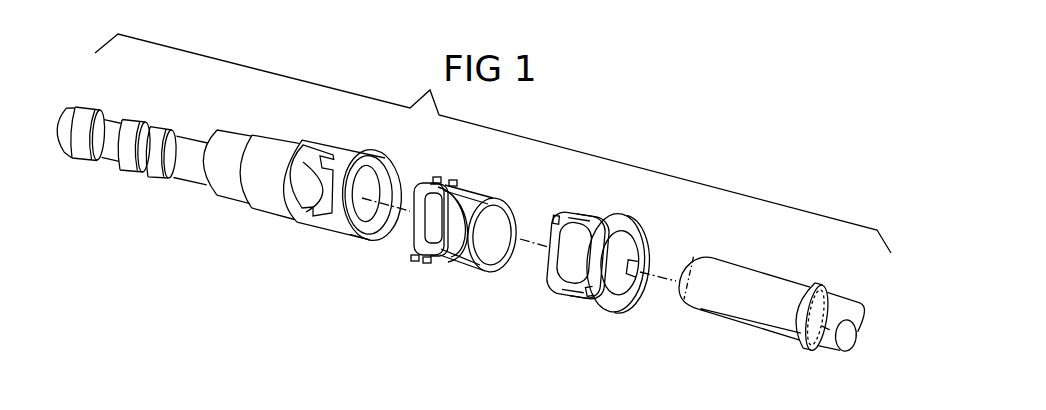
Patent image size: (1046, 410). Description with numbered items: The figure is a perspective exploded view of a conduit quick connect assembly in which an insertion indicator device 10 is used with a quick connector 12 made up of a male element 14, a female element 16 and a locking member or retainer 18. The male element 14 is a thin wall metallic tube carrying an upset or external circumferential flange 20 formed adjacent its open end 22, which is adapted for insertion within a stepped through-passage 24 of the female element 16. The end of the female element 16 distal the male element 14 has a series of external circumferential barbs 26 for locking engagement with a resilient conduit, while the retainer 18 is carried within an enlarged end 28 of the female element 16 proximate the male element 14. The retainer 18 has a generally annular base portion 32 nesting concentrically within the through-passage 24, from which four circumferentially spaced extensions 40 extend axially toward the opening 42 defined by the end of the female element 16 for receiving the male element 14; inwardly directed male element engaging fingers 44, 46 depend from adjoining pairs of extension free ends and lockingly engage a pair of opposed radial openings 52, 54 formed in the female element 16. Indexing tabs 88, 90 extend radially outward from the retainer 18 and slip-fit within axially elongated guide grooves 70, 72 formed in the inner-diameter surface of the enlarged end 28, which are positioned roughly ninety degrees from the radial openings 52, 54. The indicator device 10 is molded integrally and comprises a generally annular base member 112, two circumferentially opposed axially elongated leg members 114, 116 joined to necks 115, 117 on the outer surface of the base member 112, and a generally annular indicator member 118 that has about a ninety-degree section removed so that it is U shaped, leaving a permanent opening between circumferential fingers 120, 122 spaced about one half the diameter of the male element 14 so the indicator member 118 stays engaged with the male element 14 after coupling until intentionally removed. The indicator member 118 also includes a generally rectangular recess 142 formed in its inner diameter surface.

The insertion indicator device 10 is at (665, 219).
The quick connector 12 is at (83, 71).
The male element 14 is at (857, 352).
The female element 16 is at (204, 207).
The locking member or retainer 18 is at (518, 187).
The external circumferential flange 20 is at (805, 350).
The open end 22 is at (715, 303).
The stepped through-passage 24 is at (398, 183).
The external circumferential barbs 26 is at (130, 158).
The enlarged end 28 is at (318, 232).
The annular base portion 32 is at (415, 233).
The extensions 40 is at (482, 193).
The opening 42 is at (361, 232).
The male element engaging finger 44 is at (455, 240).
The male element engaging finger 46 is at (505, 253).
The radial opening 52 is at (307, 160).
The radial opening 54 is at (360, 177).
The guide groove 70 is at (383, 162).
The guide groove 72 is at (360, 238).
The indexing tab 88 is at (445, 187).
The indexing tab 90 is at (425, 258).
The base member 112 is at (554, 275).
The leg member 114 is at (586, 226).
The neck 115 is at (573, 222).
The leg member 116 is at (572, 290).
The neck 117 is at (561, 285).
The indicator member 118 is at (632, 294).
The circumferential finger 120 is at (610, 227).
The circumferential finger 122 is at (588, 291).
The rectangular recess 142 is at (642, 288).